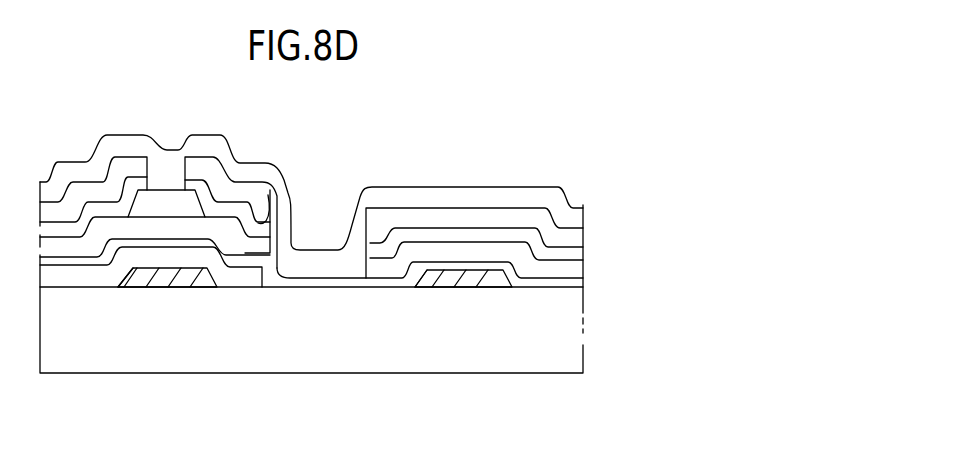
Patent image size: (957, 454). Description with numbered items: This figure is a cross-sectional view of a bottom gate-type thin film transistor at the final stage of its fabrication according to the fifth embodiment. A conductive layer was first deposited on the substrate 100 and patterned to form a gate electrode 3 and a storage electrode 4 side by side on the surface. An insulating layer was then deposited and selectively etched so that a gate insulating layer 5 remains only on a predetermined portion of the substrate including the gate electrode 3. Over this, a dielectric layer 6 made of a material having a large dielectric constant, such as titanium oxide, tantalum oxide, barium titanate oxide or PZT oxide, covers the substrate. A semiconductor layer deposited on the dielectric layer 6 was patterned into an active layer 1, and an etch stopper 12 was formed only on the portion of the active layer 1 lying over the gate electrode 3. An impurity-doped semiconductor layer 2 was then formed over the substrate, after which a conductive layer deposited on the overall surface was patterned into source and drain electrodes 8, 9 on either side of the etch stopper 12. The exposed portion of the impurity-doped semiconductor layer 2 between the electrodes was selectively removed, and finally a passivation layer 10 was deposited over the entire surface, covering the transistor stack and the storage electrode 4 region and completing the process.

The substrate 100 is at (570, 337).
The active layer 1 is at (131, 270).
The gate electrode 3 is at (171, 287).
The storage electrode 4 is at (456, 273).
The gate insulating layer 5 is at (236, 282).
The dielectric layer 6 is at (353, 283).
The impurity-doped semiconductor layer 2 is at (254, 211).
The source electrode 8 is at (121, 166).
The drain electrode 9 is at (206, 165).
The etch stopper 12 is at (171, 202).
The passivation layer 10 is at (583, 212).